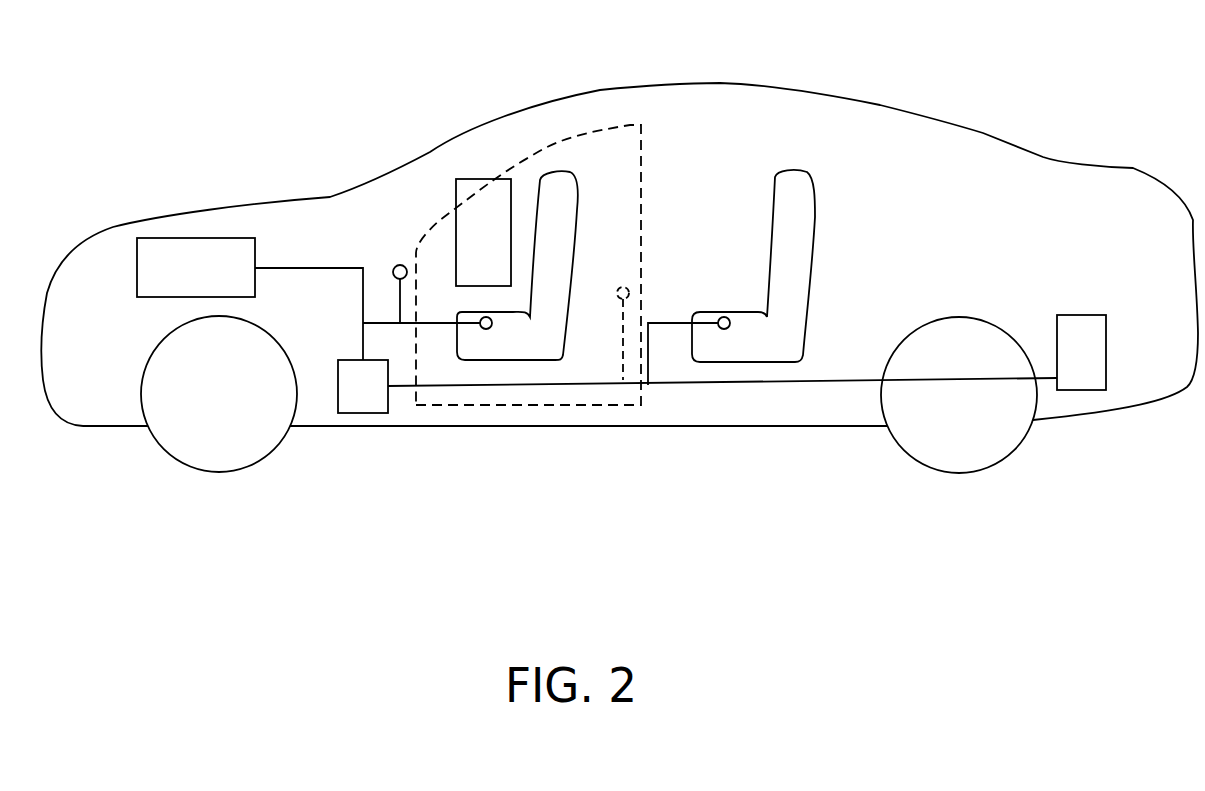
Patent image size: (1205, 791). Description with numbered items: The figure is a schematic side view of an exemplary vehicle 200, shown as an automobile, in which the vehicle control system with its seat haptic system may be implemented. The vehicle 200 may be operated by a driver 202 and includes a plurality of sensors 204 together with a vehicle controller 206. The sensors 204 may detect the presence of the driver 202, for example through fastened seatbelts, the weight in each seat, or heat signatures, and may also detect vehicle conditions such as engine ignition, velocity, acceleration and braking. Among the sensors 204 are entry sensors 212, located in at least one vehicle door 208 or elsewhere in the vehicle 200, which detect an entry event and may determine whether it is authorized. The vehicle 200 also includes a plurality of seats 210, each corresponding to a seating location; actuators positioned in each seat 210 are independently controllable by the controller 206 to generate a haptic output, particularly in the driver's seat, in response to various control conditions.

The vehicle 200 is at (677, 83).
The driver 202 is at (483, 180).
The sensors 204 is at (160, 297).
The vehicle controller 206 is at (351, 413).
The vehicle door 208 is at (558, 137).
The vehicle seat 210 is at (518, 352).
The entry sensors 212 is at (400, 265).